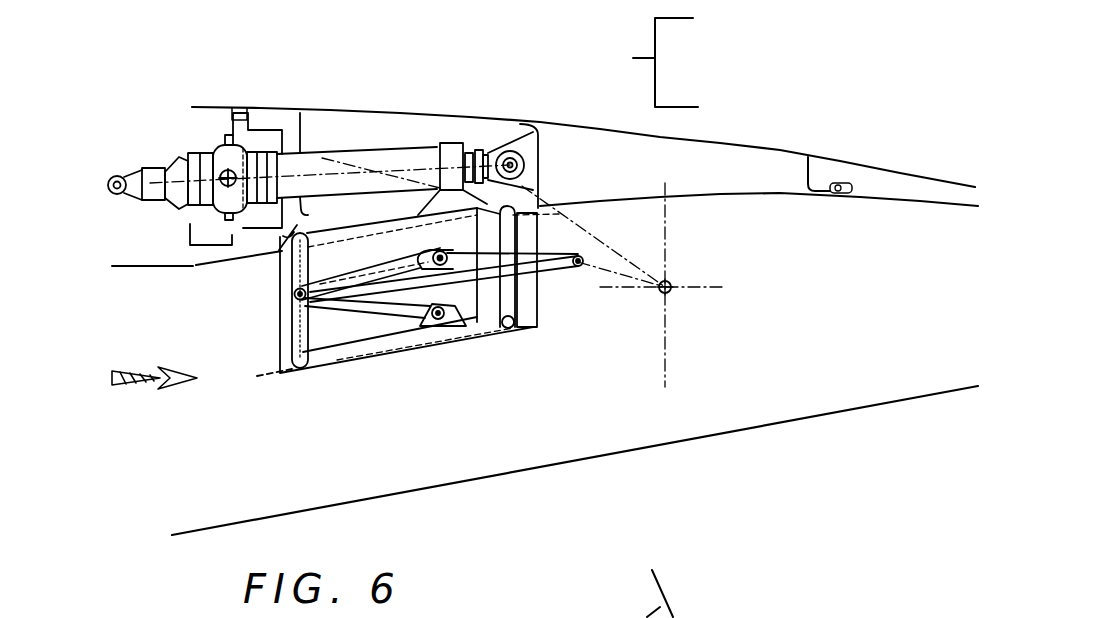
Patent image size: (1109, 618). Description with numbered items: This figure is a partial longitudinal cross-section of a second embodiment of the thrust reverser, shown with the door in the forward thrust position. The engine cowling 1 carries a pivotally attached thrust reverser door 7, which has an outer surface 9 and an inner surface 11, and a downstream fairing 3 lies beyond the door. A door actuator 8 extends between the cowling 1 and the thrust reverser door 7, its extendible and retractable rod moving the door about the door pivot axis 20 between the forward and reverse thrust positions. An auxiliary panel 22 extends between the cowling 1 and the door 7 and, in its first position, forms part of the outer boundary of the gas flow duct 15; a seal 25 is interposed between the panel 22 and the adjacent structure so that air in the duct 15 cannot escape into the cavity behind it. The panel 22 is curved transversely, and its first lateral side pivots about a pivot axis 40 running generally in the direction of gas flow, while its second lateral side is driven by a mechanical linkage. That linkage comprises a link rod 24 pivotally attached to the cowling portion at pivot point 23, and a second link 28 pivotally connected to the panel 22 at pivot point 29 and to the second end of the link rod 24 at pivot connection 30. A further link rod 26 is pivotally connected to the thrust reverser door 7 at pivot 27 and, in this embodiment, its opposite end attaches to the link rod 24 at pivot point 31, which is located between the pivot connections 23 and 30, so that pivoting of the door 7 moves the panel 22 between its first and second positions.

The engine cowling 1 is at (208, 107).
The downstream fairing 3 is at (905, 185).
The thrust reverser door 7 is at (578, 148).
The door actuator 8 is at (380, 167).
The outer surface 9 is at (780, 146).
The inner surface 11 is at (715, 193).
The gas flow duct 15 is at (575, 429).
The door pivot axis 20 is at (668, 280).
The auxiliary panel 22 is at (347, 352).
The pivot point 23 is at (523, 327).
The link rod 24 is at (500, 233).
The seal 25 is at (297, 263).
The link rod 26 is at (528, 267).
The pivot 27 is at (582, 264).
The second link 28 is at (397, 303).
The pivot point 29 is at (480, 333).
The pivot connection 30 is at (295, 307).
The pivot point 31 is at (300, 285).
The pivot axis 40 is at (257, 375).